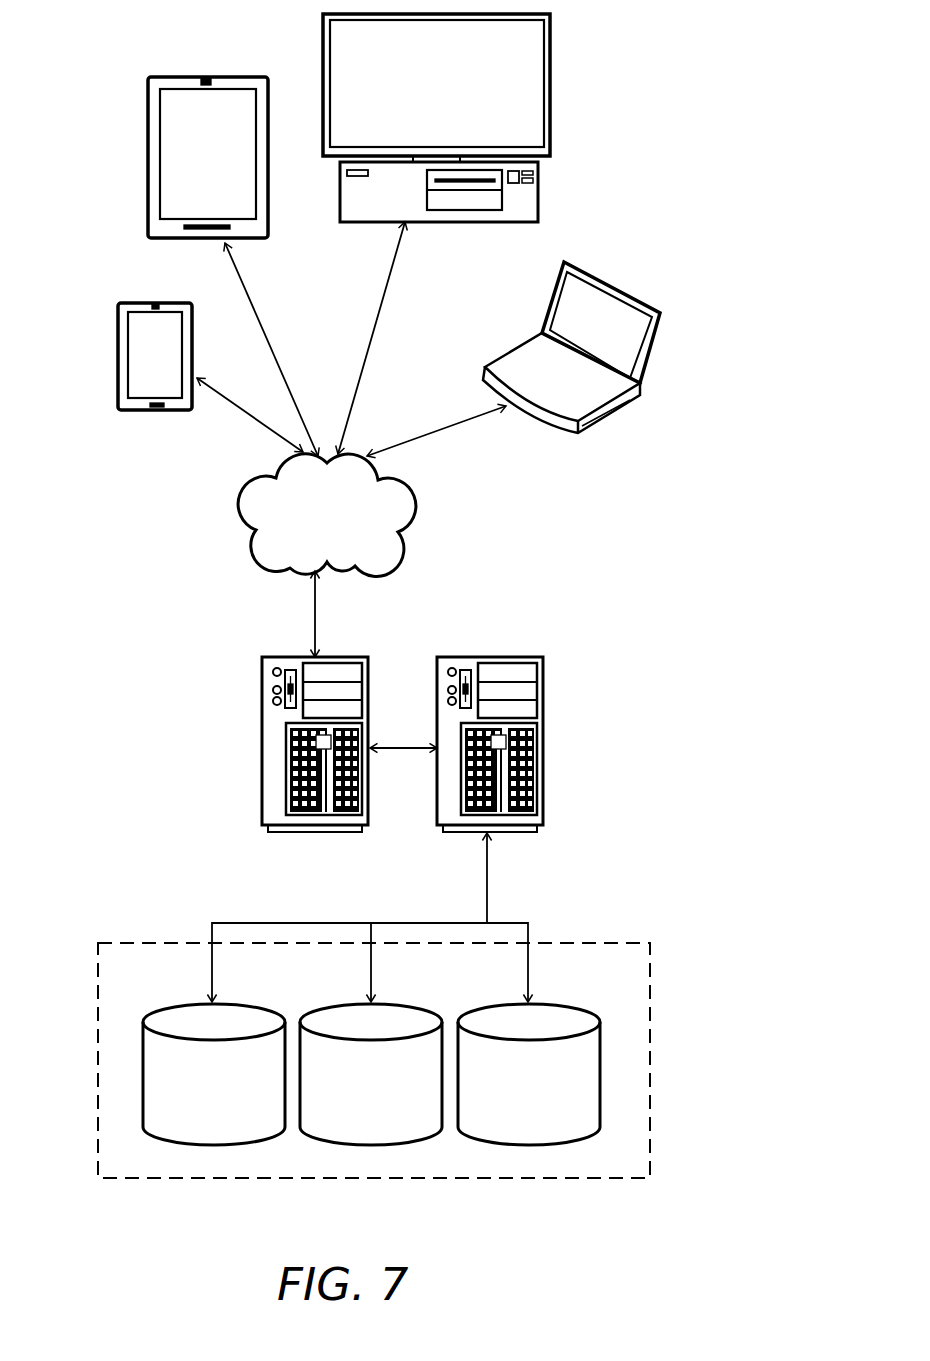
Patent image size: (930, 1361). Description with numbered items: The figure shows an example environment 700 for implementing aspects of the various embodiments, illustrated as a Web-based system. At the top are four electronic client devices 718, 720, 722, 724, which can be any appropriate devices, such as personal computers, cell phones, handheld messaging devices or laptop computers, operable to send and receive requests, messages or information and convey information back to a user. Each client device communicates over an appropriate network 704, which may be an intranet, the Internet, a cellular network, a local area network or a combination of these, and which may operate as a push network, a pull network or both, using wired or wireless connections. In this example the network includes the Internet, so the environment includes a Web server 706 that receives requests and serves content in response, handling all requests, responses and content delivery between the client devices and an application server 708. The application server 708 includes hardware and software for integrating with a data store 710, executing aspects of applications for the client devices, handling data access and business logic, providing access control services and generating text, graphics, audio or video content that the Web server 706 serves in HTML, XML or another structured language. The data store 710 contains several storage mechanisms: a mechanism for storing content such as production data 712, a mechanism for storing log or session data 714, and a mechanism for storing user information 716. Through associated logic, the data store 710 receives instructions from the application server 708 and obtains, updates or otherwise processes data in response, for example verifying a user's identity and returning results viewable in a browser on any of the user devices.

The environment 700 is at (686, 140).
The network 704 is at (251, 516).
The Web server 706 is at (262, 808).
The application server 708 is at (437, 818).
The data store 710 is at (130, 1180).
The content storage mechanism 712 is at (233, 1143).
The session data storage mechanism 714 is at (388, 1143).
The user information storage mechanism 716 is at (550, 1143).
The electronic client device 718 is at (147, 78).
The electronic client device 720 is at (118, 310).
The electronic client device 722 is at (663, 323).
The electronic client device 724 is at (553, 33).